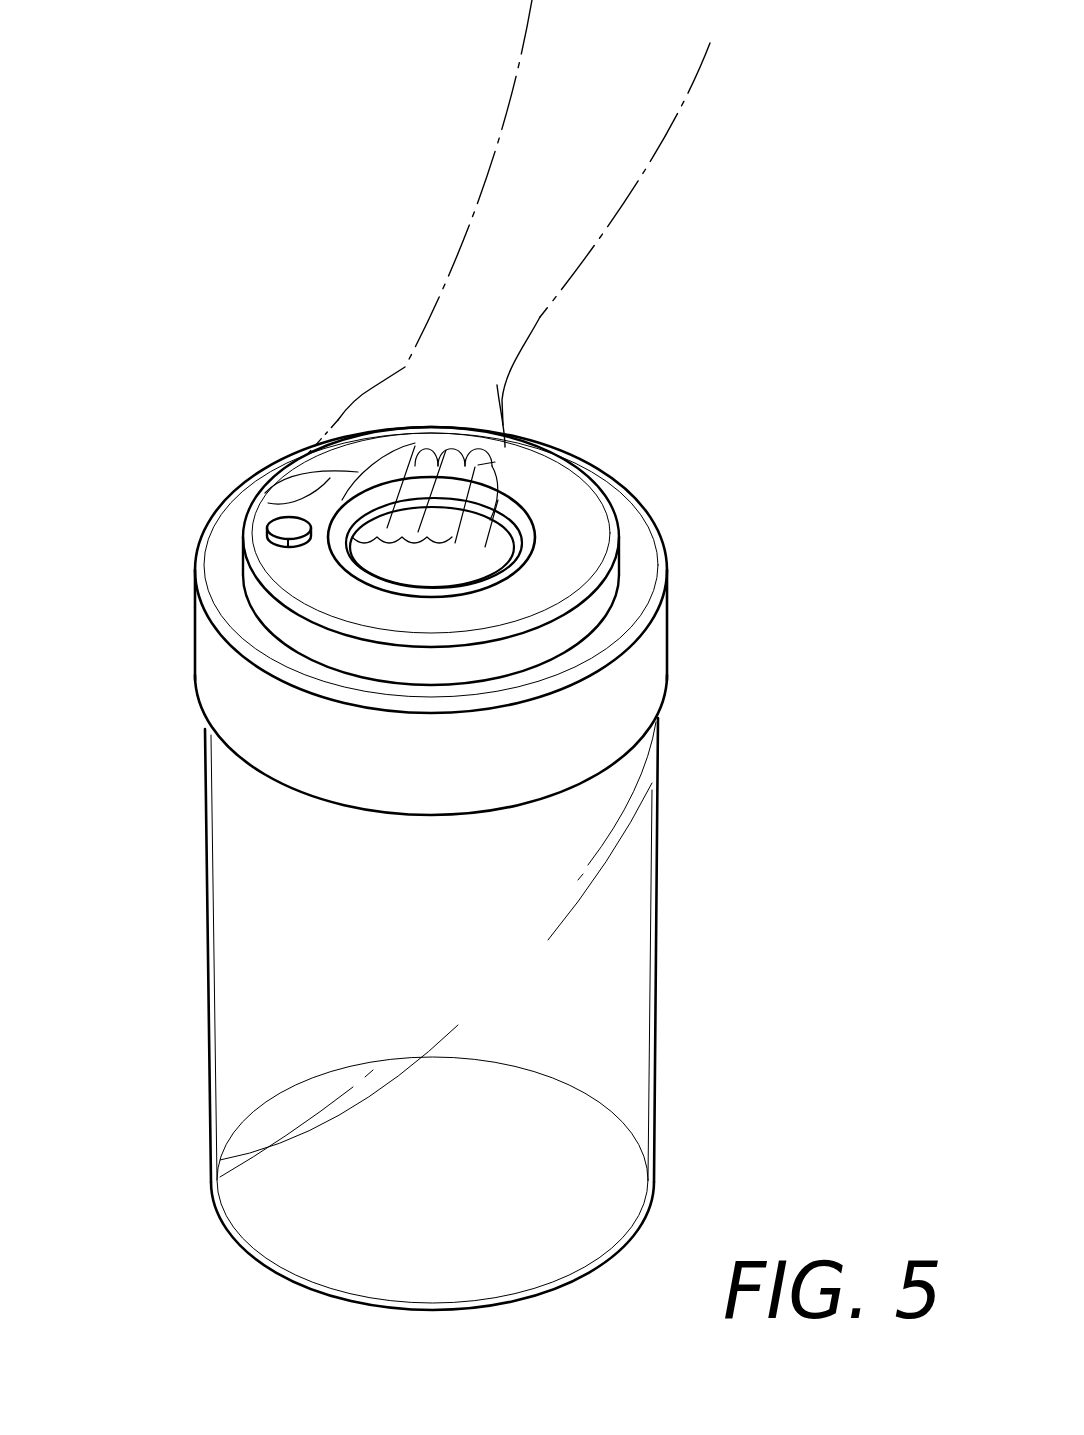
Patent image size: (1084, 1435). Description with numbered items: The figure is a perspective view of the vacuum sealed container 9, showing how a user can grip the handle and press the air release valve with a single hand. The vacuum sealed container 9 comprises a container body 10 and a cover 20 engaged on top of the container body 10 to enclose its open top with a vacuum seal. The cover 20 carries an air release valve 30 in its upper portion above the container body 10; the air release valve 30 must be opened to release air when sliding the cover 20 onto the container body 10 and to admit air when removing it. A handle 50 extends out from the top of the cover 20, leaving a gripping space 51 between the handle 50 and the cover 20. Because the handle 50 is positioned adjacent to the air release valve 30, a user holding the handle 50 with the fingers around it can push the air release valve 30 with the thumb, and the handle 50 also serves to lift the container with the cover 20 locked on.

The vacuum sealed container 9 is at (157, 735).
The container body 10 is at (212, 962).
The cover 20 is at (193, 617).
The air release valve 30 is at (268, 533).
The handle 50 is at (484, 577).
The gripping space 51 is at (427, 565).